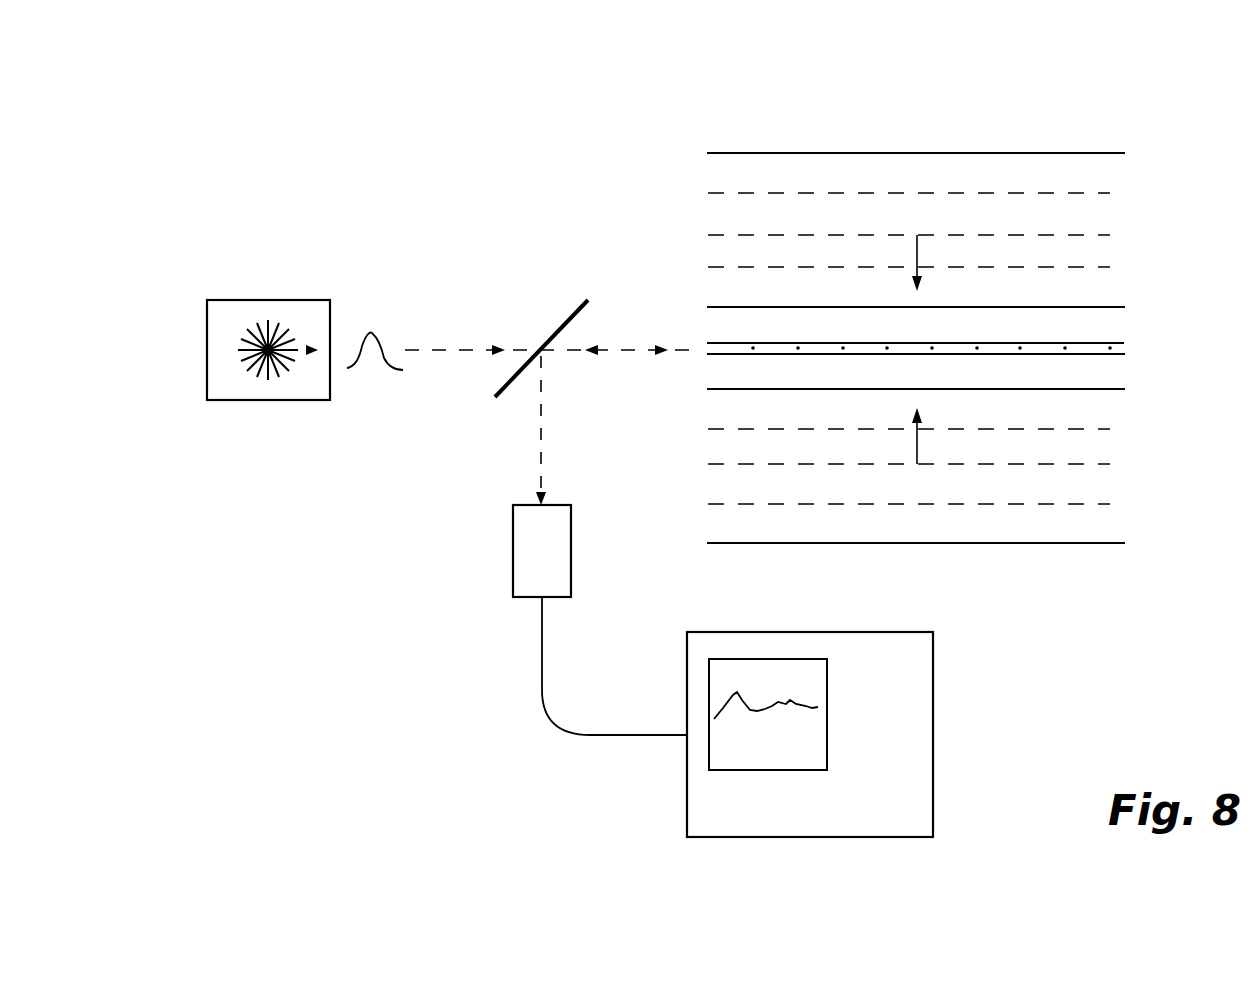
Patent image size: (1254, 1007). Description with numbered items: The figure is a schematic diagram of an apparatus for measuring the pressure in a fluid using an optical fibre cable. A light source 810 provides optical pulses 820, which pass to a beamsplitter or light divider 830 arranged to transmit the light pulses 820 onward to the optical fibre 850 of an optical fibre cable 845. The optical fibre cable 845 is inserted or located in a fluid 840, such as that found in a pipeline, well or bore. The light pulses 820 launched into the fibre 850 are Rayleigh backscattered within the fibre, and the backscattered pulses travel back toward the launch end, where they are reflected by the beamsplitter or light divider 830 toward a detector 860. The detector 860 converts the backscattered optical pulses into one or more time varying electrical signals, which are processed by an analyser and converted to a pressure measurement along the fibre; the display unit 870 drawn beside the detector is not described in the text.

The light source 810 is at (270, 300).
The optical pulses 820 is at (387, 332).
The beamsplitter or light divider 830 is at (556, 312).
The fluid 840 is at (1029, 170).
The optical fibre cable 845 is at (1108, 388).
The optical fibre 850 is at (1125, 341).
The detector 860 is at (496, 560).
The display/analyzer 870 is at (823, 632).